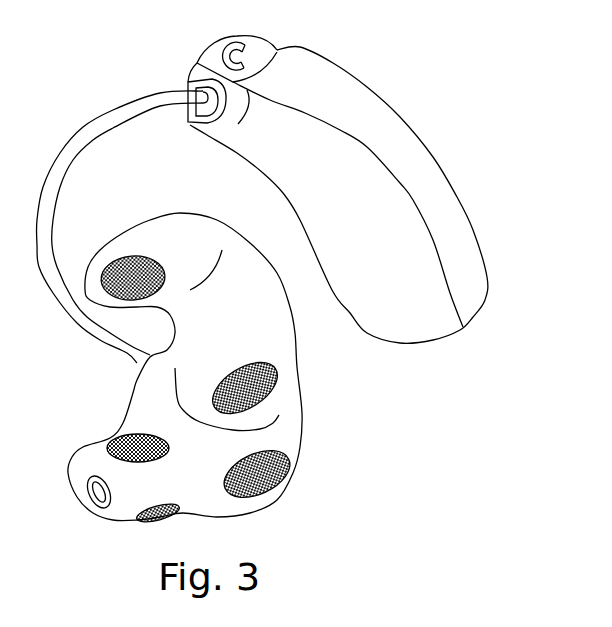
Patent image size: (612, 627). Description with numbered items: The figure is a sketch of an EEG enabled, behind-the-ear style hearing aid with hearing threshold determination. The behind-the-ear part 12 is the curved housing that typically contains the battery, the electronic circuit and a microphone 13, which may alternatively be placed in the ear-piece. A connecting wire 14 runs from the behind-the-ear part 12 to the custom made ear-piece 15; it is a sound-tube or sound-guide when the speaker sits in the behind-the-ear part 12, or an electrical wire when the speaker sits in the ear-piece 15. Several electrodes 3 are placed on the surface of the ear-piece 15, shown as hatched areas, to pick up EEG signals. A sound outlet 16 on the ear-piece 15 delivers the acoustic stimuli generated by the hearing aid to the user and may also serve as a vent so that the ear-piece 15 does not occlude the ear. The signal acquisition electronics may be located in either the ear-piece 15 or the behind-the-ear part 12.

The behind-the-ear part 12 is at (433, 343).
The microphone 13 is at (227, 52).
The connecting wire 14 is at (107, 110).
The ear-piece 15 is at (295, 360).
The electrodes 3 is at (110, 438).
The sound outlet 16 is at (90, 507).